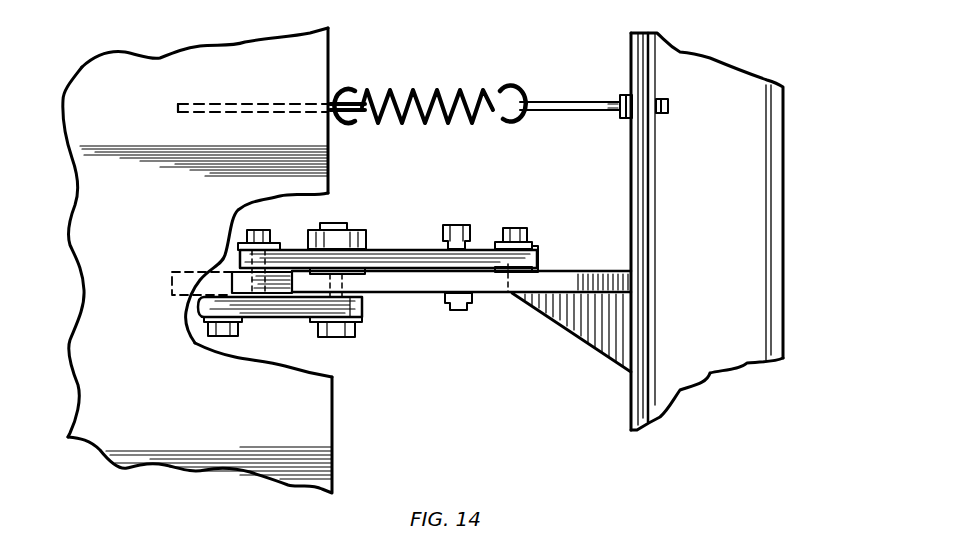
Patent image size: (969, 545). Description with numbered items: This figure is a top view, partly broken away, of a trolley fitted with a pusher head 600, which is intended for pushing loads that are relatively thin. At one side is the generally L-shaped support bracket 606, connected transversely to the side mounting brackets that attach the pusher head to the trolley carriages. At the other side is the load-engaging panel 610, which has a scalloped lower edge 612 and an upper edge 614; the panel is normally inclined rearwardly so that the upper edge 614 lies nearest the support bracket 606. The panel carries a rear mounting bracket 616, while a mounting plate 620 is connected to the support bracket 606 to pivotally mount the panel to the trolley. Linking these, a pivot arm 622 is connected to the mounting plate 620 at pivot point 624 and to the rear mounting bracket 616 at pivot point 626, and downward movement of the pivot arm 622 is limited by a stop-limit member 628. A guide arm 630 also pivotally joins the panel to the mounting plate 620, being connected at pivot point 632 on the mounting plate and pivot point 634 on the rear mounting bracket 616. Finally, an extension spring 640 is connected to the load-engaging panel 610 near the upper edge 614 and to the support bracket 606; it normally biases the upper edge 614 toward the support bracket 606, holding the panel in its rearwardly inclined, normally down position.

The pusher head 600 is at (588, 34).
The support bracket 606 is at (722, 70).
The load-engaging panel 610 is at (196, 76).
The scalloped lower edge 612 is at (73, 173).
The upper edge 614 is at (330, 62).
The rear mounting bracket 616 is at (235, 270).
The mounting plate 620 is at (497, 283).
The pivot arm 622 is at (410, 254).
The pivot point 624 is at (512, 232).
The pivot point 626 is at (262, 232).
The stop-limit member 628 is at (363, 232).
The guide arm 630 is at (297, 320).
The pivot point 632 is at (356, 331).
The pivot point 634 is at (222, 337).
The extension spring 640 is at (450, 98).